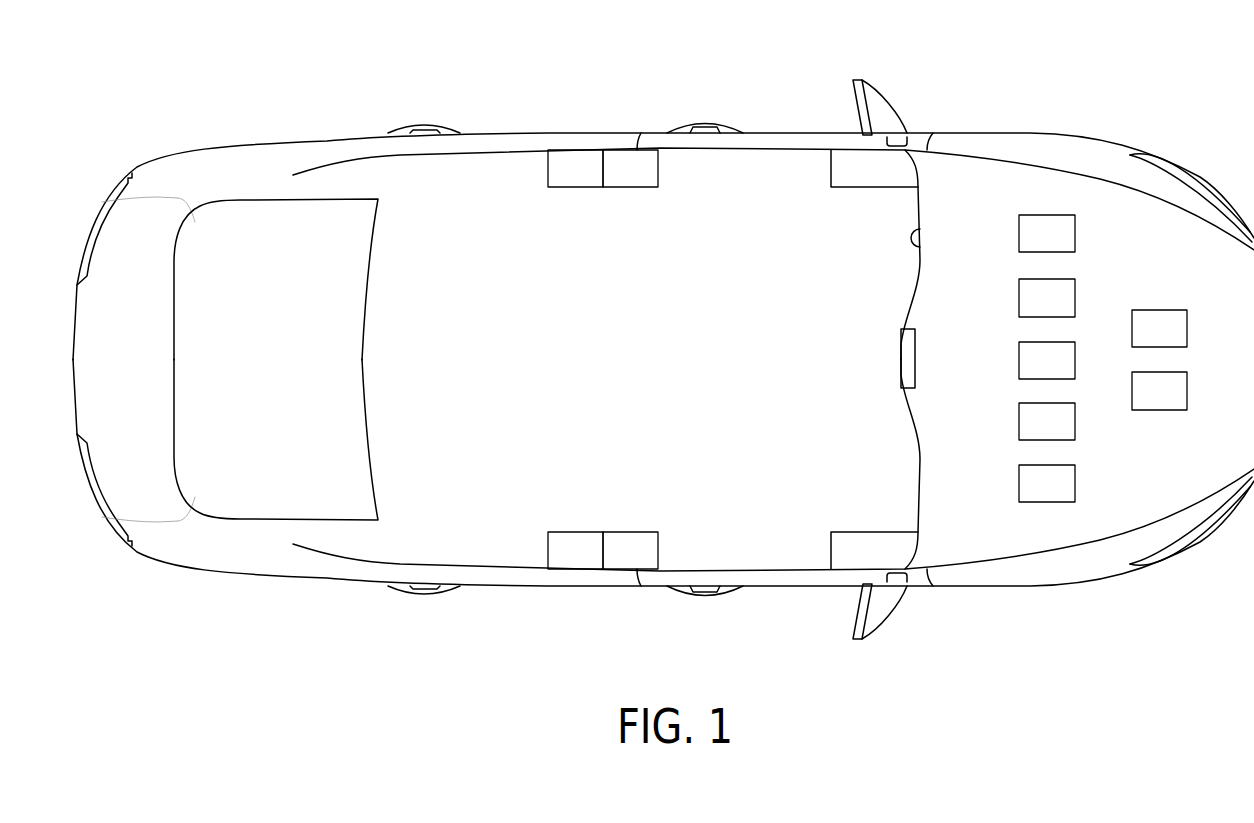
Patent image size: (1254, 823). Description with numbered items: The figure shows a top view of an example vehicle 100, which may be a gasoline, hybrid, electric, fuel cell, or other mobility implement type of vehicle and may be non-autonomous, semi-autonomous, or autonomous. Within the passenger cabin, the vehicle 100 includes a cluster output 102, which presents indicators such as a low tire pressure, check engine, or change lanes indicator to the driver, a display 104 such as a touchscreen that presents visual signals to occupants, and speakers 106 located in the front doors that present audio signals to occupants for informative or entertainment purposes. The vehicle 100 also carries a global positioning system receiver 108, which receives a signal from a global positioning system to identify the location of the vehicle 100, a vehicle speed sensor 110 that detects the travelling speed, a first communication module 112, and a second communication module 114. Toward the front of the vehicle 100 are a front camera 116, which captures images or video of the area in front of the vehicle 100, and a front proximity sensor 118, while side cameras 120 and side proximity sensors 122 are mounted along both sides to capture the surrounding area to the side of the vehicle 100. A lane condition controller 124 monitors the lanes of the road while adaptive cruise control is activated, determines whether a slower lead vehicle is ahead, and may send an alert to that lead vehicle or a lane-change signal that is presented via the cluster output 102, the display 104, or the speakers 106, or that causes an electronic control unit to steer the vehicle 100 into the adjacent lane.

The vehicle 100 is at (1092, 83).
The cluster output 102 is at (906, 238).
The display 104 is at (905, 357).
The speakers 106 is at (847, 178).
The global positioning system (GPS) receiver 108 is at (1067, 244).
The vehicle speed sensor 110 is at (1067, 308).
The communication module 112 is at (1067, 371).
The communication module 114 is at (1067, 432).
The camera 116 is at (1180, 339).
The proximity sensor 118 is at (1180, 401).
The cameras 120 is at (596, 179).
The proximity sensors 122 is at (651, 179).
The lane condition controller 124 is at (1067, 494).